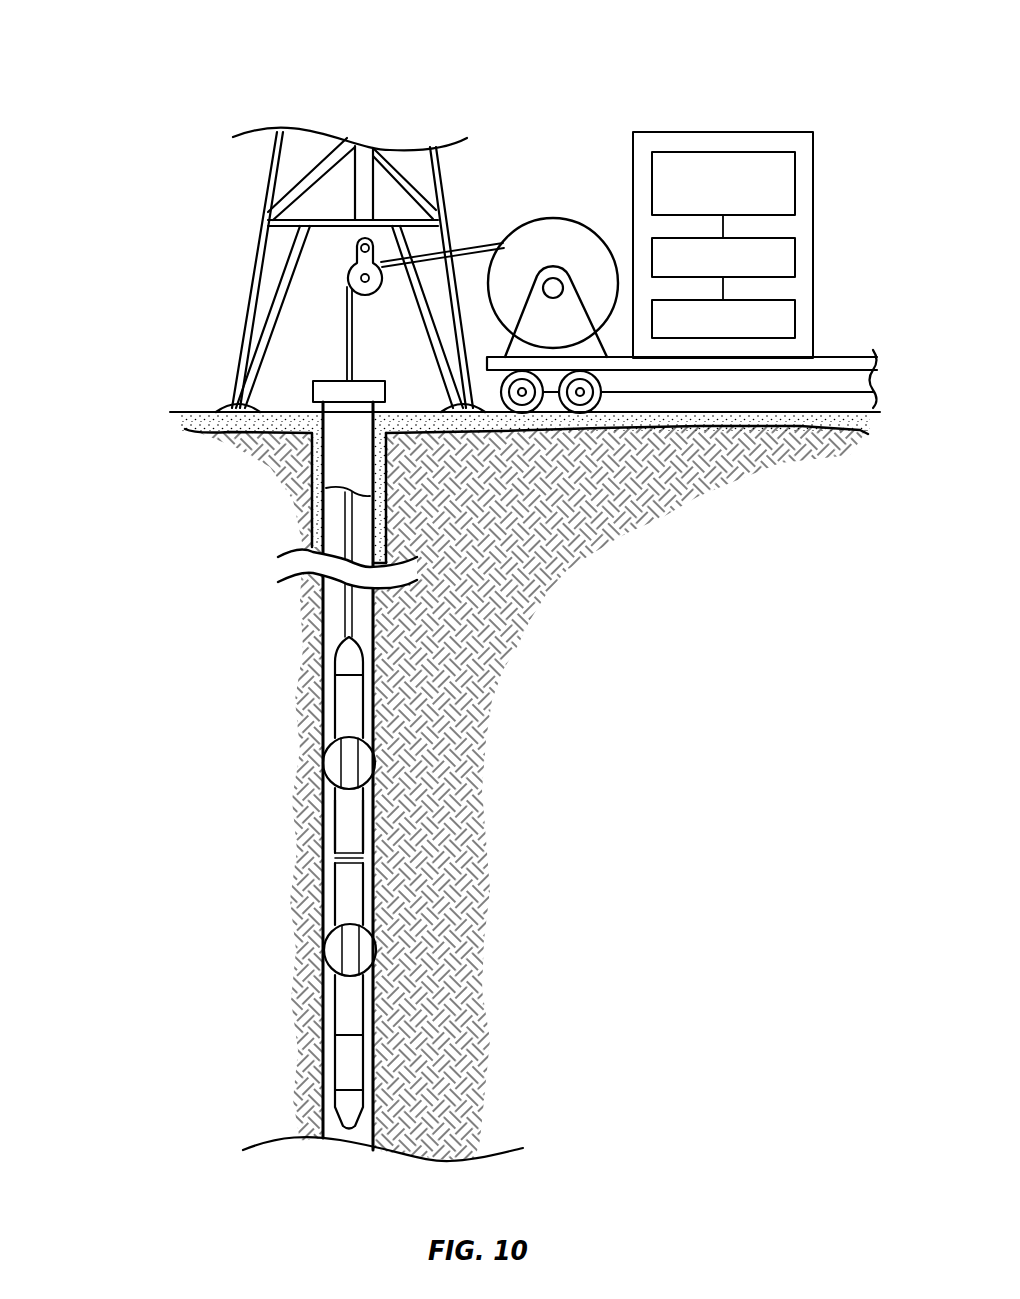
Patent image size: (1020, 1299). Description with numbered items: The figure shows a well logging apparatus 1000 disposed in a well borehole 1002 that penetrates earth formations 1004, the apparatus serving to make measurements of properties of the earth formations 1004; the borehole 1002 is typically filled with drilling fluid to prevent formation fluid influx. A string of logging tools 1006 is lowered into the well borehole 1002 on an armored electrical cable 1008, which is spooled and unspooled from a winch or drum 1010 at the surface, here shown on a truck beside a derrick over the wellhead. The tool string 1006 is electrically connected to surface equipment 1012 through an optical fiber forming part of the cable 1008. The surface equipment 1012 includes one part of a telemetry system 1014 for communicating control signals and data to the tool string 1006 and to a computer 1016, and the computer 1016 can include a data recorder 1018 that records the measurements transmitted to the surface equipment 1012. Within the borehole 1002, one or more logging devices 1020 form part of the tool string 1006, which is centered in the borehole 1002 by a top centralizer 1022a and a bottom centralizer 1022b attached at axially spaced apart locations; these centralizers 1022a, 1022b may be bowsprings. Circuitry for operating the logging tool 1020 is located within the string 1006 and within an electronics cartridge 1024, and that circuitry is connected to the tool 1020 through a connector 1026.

The well logging apparatus 1000 is at (749, 52).
The well borehole 1002 is at (274, 1052).
The earth formations 1004 is at (445, 817).
The string of logging tools 1006 is at (217, 856).
The armored electrical cable 1008 is at (345, 617).
The winch or drum 1010 is at (552, 220).
The surface equipment 1012 is at (768, 225).
The telemetry system 1014 is at (797, 320).
The computer 1016 is at (797, 258).
The data recorder 1018 is at (797, 186).
The logging device 1020 is at (333, 893).
The top centralizer 1022a is at (335, 762).
The bottom centralizer 1022b is at (348, 950).
The electronics cartridge 1024 is at (335, 827).
The connector 1026 is at (335, 858).